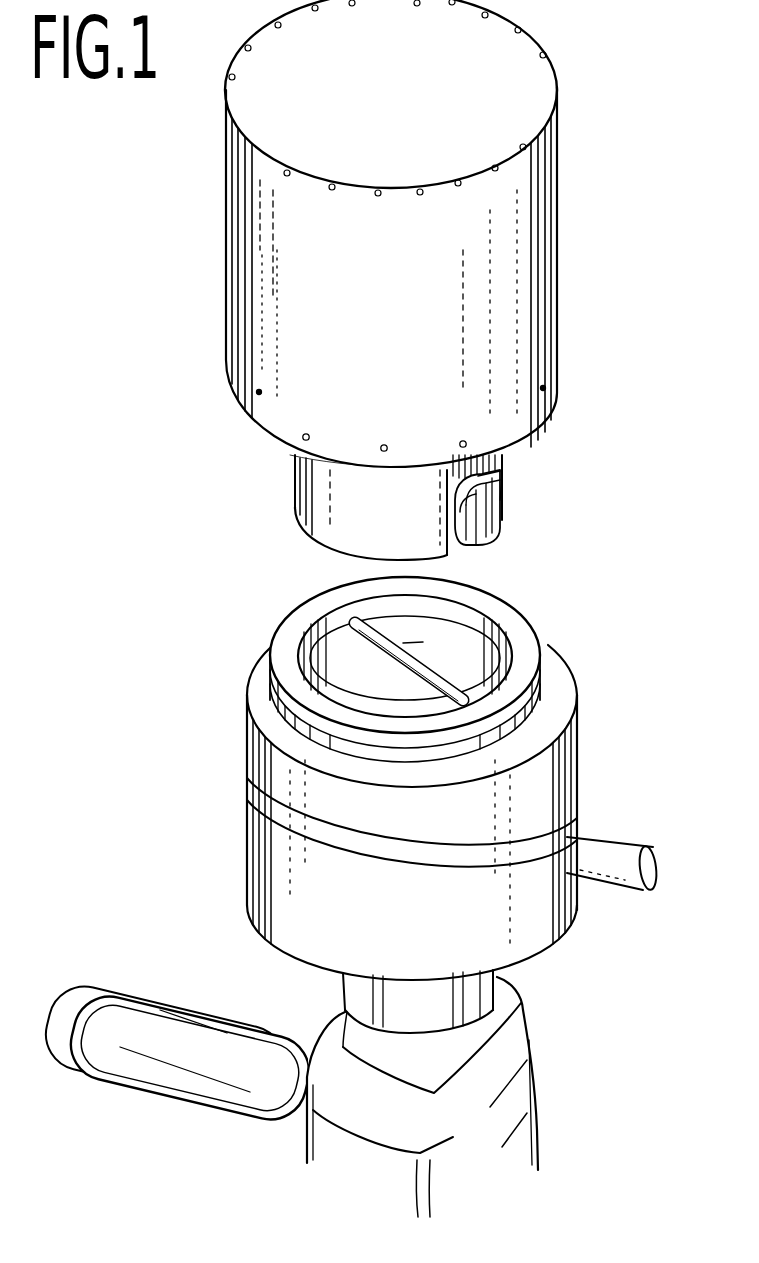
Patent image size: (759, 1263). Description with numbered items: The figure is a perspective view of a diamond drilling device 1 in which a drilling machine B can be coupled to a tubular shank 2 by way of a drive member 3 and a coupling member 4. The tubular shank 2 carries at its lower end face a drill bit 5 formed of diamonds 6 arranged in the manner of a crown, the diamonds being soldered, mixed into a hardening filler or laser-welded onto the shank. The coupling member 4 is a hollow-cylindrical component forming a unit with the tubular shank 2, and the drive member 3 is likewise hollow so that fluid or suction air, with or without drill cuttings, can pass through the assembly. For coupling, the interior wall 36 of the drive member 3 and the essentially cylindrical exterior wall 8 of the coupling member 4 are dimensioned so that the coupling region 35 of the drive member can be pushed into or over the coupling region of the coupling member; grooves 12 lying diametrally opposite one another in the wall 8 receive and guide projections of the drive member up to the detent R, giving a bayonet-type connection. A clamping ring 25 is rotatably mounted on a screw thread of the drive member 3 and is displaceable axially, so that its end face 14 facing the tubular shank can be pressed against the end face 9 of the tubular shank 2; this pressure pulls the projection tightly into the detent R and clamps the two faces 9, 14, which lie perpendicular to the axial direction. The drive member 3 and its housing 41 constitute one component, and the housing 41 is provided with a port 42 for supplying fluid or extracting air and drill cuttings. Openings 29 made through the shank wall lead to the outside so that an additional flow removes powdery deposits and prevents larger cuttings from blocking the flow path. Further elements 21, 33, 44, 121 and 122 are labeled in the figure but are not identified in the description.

The diamond drilling device 1 is at (134, 538).
The tubular shank 2 is at (258, 298).
The drive member 3 is at (652, 690).
The coupling member 4 is at (628, 476).
The drill bit 5 is at (224, 100).
The diamonds 6 is at (557, 143).
The exterior wall of coupling member 8 is at (297, 480).
The end face of tubular shank 9 is at (285, 446).
The grooves 12 is at (460, 548).
The end face of clamping ring 14 is at (262, 690).
The lower edge of neck 21 is at (320, 533).
The clamping ring 25 is at (258, 748).
The openings 29 is at (258, 394).
The threads 33 is at (548, 705).
The coupling region of drive member 35 is at (500, 628).
The interior wall of drive member 36 is at (300, 606).
The housing 41 is at (553, 913).
The port 42 is at (613, 850).
The handle lever 44 is at (125, 1020).
The lug side portion 121 is at (503, 527).
The lug top portion 122 is at (503, 497).
The detent R is at (503, 487).
The drilling machine B is at (520, 1098).